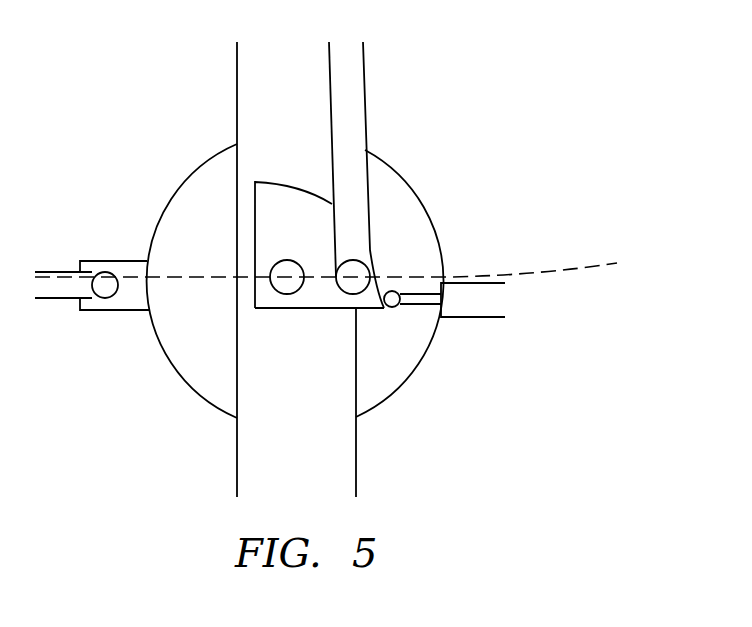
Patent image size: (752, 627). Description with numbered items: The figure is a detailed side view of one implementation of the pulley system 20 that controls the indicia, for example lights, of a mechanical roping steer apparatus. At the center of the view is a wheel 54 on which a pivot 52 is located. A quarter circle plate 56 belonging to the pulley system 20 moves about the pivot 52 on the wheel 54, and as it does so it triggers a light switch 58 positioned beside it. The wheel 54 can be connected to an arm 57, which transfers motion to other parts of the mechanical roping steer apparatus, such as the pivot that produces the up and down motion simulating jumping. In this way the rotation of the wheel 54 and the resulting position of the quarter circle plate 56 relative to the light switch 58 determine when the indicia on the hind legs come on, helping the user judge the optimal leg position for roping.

The pulley system 20 is at (543, 85).
The pivot 52 is at (282, 286).
The wheel 54 is at (395, 368).
The quarter circle plate 56 is at (283, 218).
The arm 57 is at (366, 125).
The light switch 58 is at (467, 312).